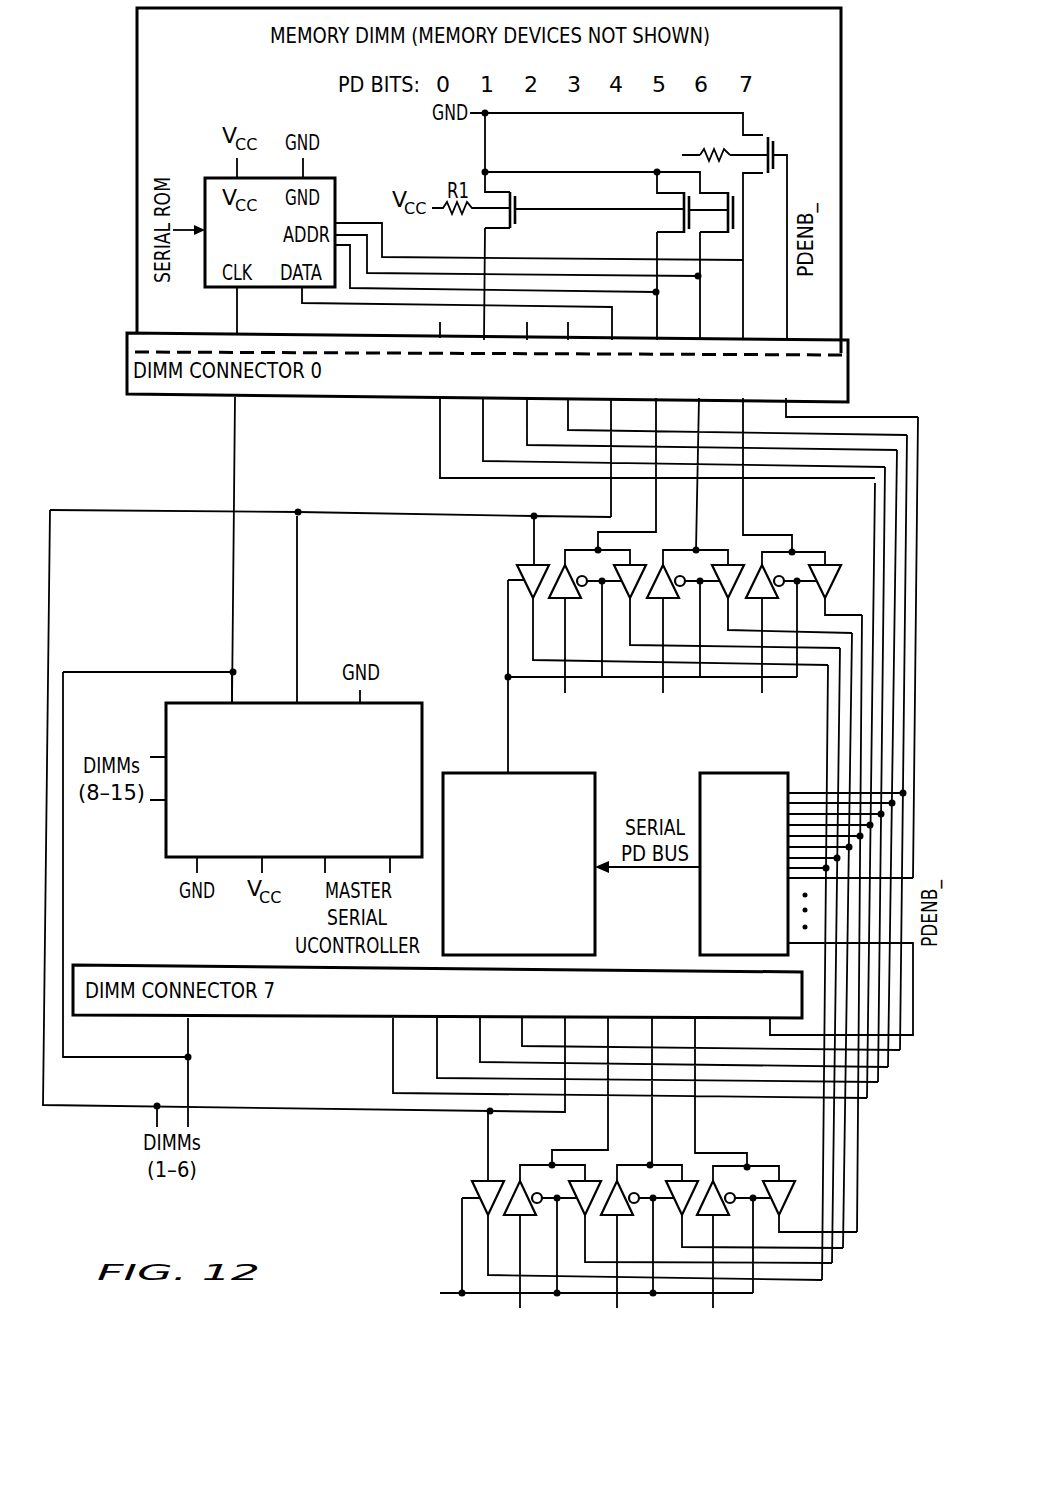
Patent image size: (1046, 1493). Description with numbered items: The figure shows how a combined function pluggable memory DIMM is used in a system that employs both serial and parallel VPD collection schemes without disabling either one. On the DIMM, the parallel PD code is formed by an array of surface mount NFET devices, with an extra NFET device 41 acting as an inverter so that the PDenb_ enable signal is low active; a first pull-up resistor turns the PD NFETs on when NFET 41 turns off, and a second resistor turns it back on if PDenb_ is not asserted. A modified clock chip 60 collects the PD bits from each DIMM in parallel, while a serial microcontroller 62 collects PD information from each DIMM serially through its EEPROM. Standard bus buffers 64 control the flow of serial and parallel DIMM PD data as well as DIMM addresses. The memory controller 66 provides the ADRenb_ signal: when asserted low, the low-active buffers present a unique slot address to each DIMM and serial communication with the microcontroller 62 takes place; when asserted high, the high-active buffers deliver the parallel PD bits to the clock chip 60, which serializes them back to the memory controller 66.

The NFET device 41 is at (736, 220).
The modified clock chip 60 is at (758, 933).
The serial microcontroller 62 is at (166, 836).
The bus buffers 64 is at (839, 548).
The memory controller 66 is at (534, 933).